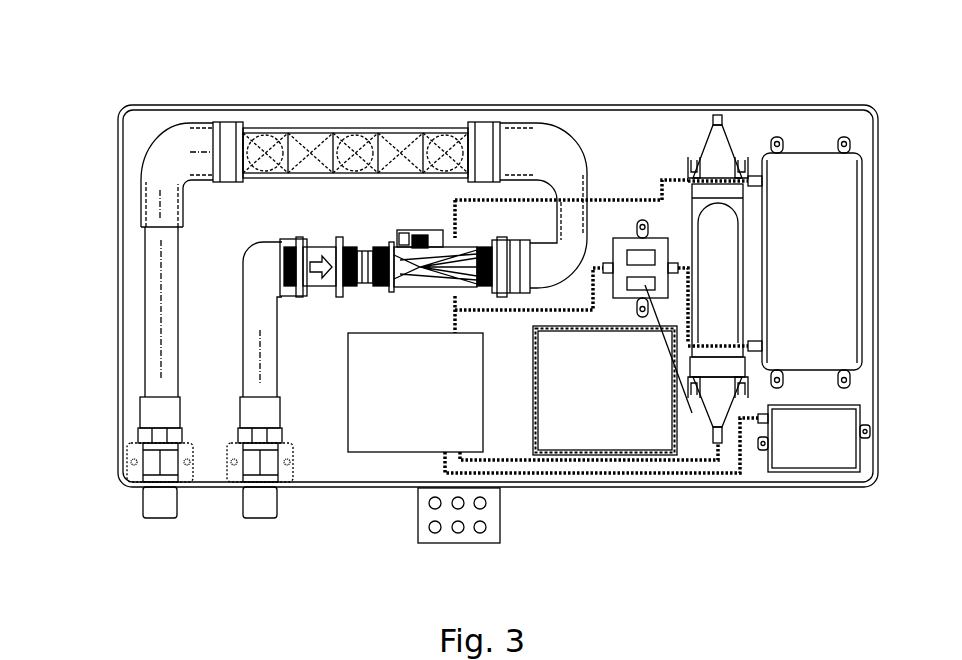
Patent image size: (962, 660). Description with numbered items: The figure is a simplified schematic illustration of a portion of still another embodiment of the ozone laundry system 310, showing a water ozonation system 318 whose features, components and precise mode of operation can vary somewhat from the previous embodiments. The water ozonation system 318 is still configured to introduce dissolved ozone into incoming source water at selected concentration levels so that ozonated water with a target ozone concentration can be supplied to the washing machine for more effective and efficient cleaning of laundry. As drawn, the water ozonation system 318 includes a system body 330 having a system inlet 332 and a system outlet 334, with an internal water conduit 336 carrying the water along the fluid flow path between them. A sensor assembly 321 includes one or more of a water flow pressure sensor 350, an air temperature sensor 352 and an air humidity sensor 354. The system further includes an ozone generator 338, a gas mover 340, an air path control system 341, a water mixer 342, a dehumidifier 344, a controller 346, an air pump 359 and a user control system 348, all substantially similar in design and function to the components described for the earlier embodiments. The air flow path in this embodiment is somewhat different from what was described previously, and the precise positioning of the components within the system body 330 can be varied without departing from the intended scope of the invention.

The ozone laundry system 310 is at (92, 83).
The water ozonation system 318 is at (838, 107).
The sensor assembly 321 is at (625, 235).
The system body 330 is at (118, 213).
The system inlet 332 is at (278, 503).
The system outlet 334 is at (143, 503).
The internal water conduit 336 is at (145, 372).
The ozone generator 338 is at (782, 157).
The gas mover 340 is at (449, 246).
The air path control system 341 is at (426, 452).
The water mixer 342 is at (341, 128).
The dehumidifier 344 is at (693, 233).
The controller 346 is at (583, 458).
The user control system 348 is at (427, 545).
The water flow pressure sensor 350 is at (316, 245).
The air temperature sensor 352 is at (637, 257).
The air humidity sensor 354 is at (688, 430).
The air pump 359 is at (778, 473).